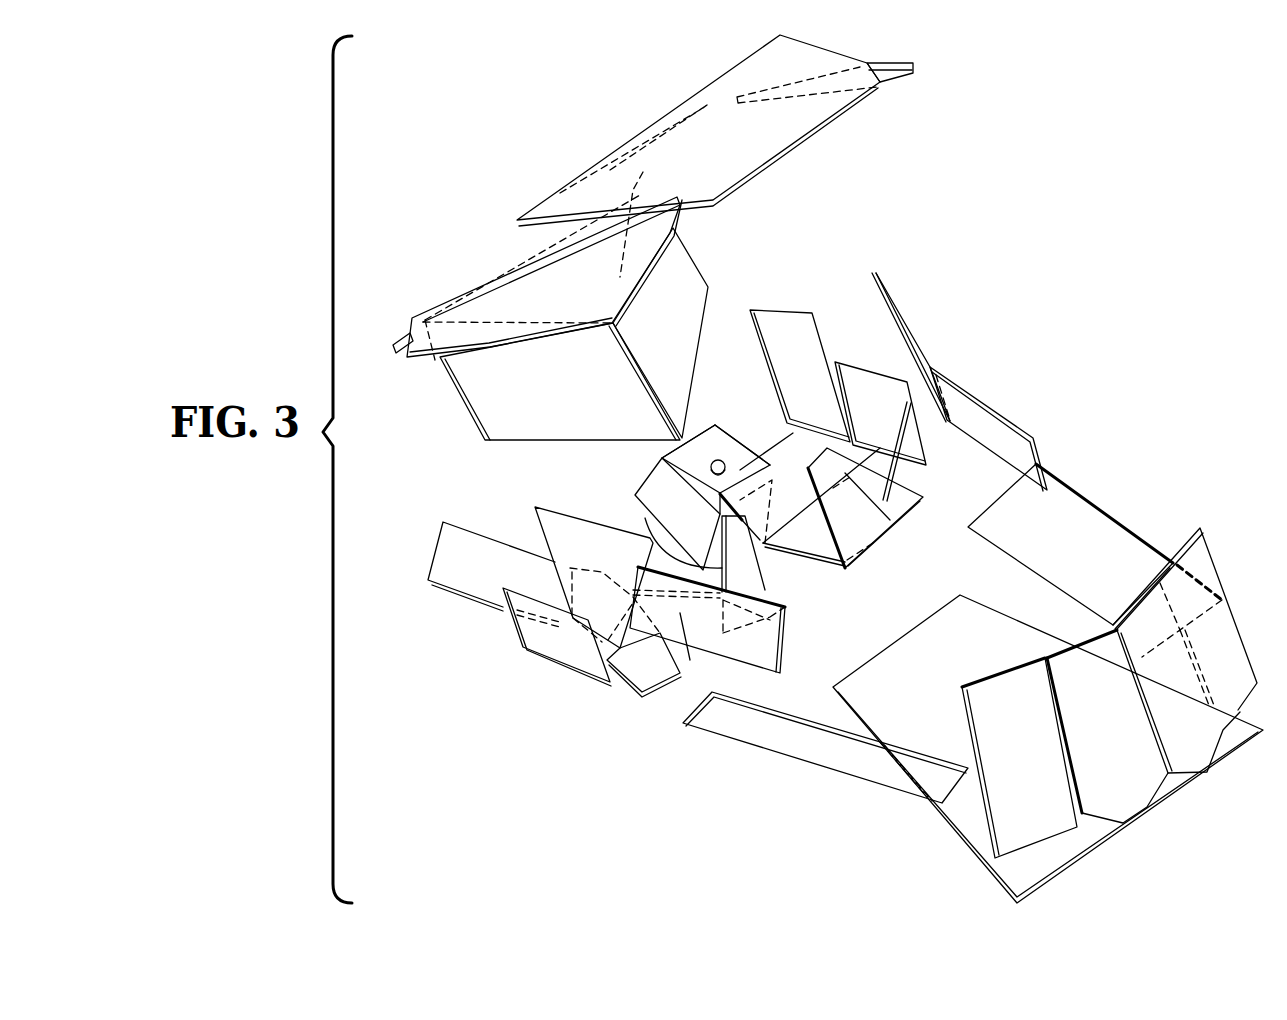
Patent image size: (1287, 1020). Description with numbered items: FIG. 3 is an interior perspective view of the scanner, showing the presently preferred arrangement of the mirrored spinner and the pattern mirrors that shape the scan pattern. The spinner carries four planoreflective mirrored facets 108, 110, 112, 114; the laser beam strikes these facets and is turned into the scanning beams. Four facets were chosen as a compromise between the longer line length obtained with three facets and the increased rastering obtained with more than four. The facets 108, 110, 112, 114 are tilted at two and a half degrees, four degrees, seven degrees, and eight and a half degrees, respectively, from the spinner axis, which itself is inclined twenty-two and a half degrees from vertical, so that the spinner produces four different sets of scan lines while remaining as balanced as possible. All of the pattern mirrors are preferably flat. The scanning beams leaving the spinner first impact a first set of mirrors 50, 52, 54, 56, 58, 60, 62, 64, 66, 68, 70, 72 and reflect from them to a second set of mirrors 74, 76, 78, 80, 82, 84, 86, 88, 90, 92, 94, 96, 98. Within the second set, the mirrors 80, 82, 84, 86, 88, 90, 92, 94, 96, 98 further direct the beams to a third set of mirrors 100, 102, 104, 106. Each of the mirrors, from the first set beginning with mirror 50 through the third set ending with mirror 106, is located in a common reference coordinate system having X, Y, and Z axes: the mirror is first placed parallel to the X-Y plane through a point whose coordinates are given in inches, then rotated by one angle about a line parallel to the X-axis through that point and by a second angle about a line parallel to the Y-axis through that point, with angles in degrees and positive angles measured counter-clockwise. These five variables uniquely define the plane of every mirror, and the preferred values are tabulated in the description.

The pattern mirror 50 is at (1009, 781).
The pattern mirror 52 is at (1091, 731).
The pattern mirror 54 is at (1172, 741).
The pattern mirror 56 is at (1210, 662).
The pattern mirror 58 is at (740, 656).
The pattern mirror 60 is at (995, 433).
The pattern mirror 62 is at (680, 613).
The pattern mirror 64 is at (731, 583).
The pattern mirror 66 is at (840, 524).
The pattern mirror 68 is at (907, 468).
The pattern mirror 70 is at (582, 559).
The pattern mirror 72 is at (905, 342).
The pattern mirror 74 is at (813, 759).
The pattern mirror 76 is at (934, 663).
The pattern mirror 78 is at (1077, 572).
The pattern mirror 80 is at (474, 574).
The pattern mirror 82 is at (540, 633).
The pattern mirror 84 is at (584, 609).
The pattern mirror 86 is at (630, 666).
The pattern mirror 88 is at (795, 543).
The pattern mirror 90 is at (775, 476).
The pattern mirror 92 is at (786, 379).
The pattern mirror 94 is at (861, 410).
The pattern mirror 96 is at (542, 392).
The pattern mirror 98 is at (647, 316).
The pattern mirror 100 is at (523, 298).
The pattern mirror 102 is at (500, 256).
The pattern mirror 104 is at (717, 148).
The pattern mirror 106 is at (870, 62).
The planoreflective mirrored facet 108 is at (740, 448).
The planoreflective mirrored facet 110 is at (665, 524).
The planoreflective mirrored facet 112 is at (748, 530).
The planoreflective mirrored facet 114 is at (658, 449).